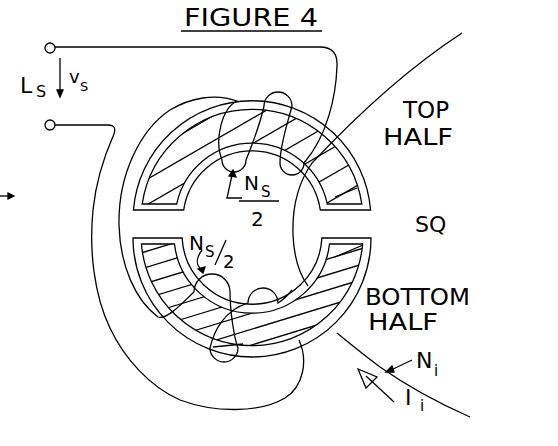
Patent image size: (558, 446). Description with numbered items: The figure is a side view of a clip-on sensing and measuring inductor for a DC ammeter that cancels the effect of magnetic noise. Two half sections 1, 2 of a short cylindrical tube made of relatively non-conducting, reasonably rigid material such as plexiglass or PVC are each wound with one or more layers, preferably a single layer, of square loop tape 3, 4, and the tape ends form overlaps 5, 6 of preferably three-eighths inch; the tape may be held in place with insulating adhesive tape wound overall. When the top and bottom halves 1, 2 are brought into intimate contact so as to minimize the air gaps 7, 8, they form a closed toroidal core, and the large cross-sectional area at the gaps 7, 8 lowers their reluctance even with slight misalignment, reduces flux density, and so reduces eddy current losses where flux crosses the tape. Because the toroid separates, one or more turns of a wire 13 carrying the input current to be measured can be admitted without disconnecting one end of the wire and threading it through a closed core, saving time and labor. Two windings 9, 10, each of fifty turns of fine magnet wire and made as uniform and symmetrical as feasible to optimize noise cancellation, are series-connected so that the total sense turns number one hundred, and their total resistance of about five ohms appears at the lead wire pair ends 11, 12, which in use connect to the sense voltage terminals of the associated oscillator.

The half section of cylindrical tube 1 is at (342, 182).
The half section of cylindrical tube 2 is at (349, 263).
The square loop tape 3 is at (371, 178).
The square loop tape 4 is at (372, 268).
The overlap 5 is at (238, 101).
The overlap 6 is at (231, 346).
The air gap 7 is at (155, 224).
The air gap 8 is at (351, 224).
The winding 9 is at (274, 93).
The winding 10 is at (213, 357).
The lead wire pair end 11 is at (92, 49).
The lead wire pair end 12 is at (87, 123).
The wire 13 is at (431, 50).